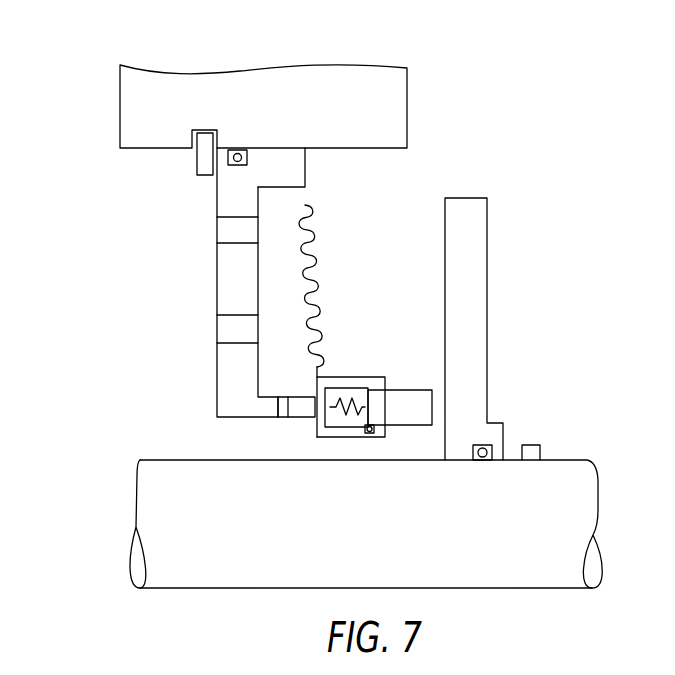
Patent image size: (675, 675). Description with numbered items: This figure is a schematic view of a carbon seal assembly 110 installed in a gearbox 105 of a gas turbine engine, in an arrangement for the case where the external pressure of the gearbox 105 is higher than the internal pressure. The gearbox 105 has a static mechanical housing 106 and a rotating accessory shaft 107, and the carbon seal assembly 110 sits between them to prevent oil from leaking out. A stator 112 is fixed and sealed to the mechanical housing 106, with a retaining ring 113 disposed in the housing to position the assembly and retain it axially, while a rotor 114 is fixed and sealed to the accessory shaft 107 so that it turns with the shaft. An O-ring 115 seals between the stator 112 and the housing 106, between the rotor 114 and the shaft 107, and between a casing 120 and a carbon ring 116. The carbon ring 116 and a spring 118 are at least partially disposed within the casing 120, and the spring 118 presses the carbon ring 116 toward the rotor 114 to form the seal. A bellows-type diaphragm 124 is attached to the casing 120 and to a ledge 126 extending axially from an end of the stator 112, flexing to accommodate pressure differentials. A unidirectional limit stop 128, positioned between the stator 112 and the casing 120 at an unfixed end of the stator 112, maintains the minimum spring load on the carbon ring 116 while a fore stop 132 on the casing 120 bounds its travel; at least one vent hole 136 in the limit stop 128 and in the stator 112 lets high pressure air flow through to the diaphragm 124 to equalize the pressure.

The gearbox 105 is at (447, 54).
The mechanical housing 106 is at (120, 107).
The accessory shaft 107 is at (567, 460).
The carbon seal assembly 110 is at (510, 165).
The stator 112 is at (310, 426).
The retaining ring 113 is at (197, 163).
The rotor 114 is at (487, 288).
The O-ring 115 is at (237, 166).
The carbon ring 116 is at (432, 408).
The spring 118 is at (340, 410).
The casing 120 is at (372, 377).
The diaphragm 124 is at (319, 233).
The ledge 126 is at (283, 188).
The limit stop 128 is at (302, 417).
The fore stop 132 is at (316, 377).
The vent hole 136 is at (217, 232).